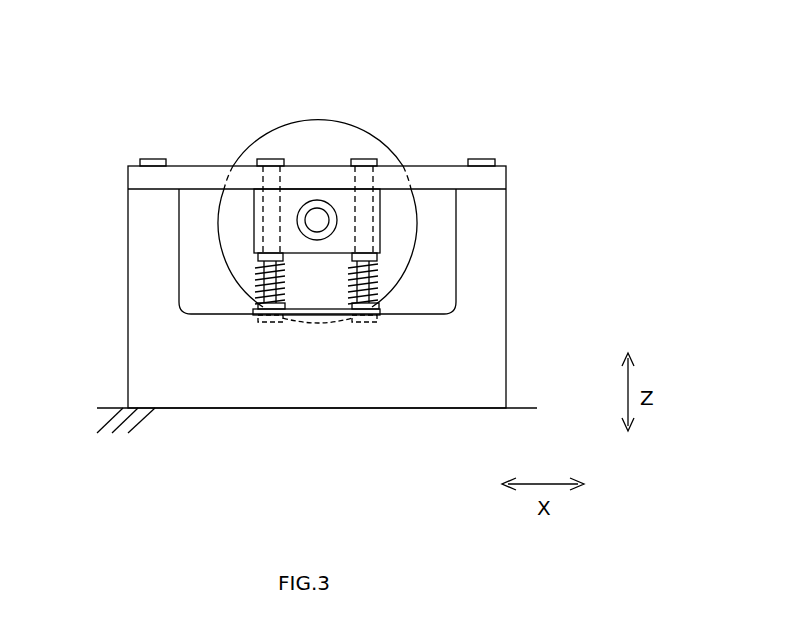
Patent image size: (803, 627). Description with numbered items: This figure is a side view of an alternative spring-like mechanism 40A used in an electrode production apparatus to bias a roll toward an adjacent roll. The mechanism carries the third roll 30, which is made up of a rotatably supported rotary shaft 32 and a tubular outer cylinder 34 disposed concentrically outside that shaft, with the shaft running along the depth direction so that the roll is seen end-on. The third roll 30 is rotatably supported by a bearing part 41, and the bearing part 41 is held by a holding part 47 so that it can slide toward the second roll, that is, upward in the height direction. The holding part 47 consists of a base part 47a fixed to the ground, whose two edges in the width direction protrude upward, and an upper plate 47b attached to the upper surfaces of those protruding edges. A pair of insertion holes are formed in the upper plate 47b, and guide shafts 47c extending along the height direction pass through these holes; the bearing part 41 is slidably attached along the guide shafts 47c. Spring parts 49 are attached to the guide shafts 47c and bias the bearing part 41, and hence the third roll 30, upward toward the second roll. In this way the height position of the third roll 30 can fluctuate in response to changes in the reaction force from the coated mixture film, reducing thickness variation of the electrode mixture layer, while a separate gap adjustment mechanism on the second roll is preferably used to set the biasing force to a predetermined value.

The spring-like mechanism 40A is at (110, 135).
The holding part 47 is at (195, 163).
The base part 47a is at (155, 296).
The upper plate 47b is at (145, 184).
The guide shafts 47c is at (270, 158).
The bearing part 41 is at (252, 187).
The rotary shaft 32 is at (318, 200).
The third roll 30 is at (408, 220).
The tubular outer cylinder 34 is at (412, 250).
The spring parts 49 is at (262, 276).